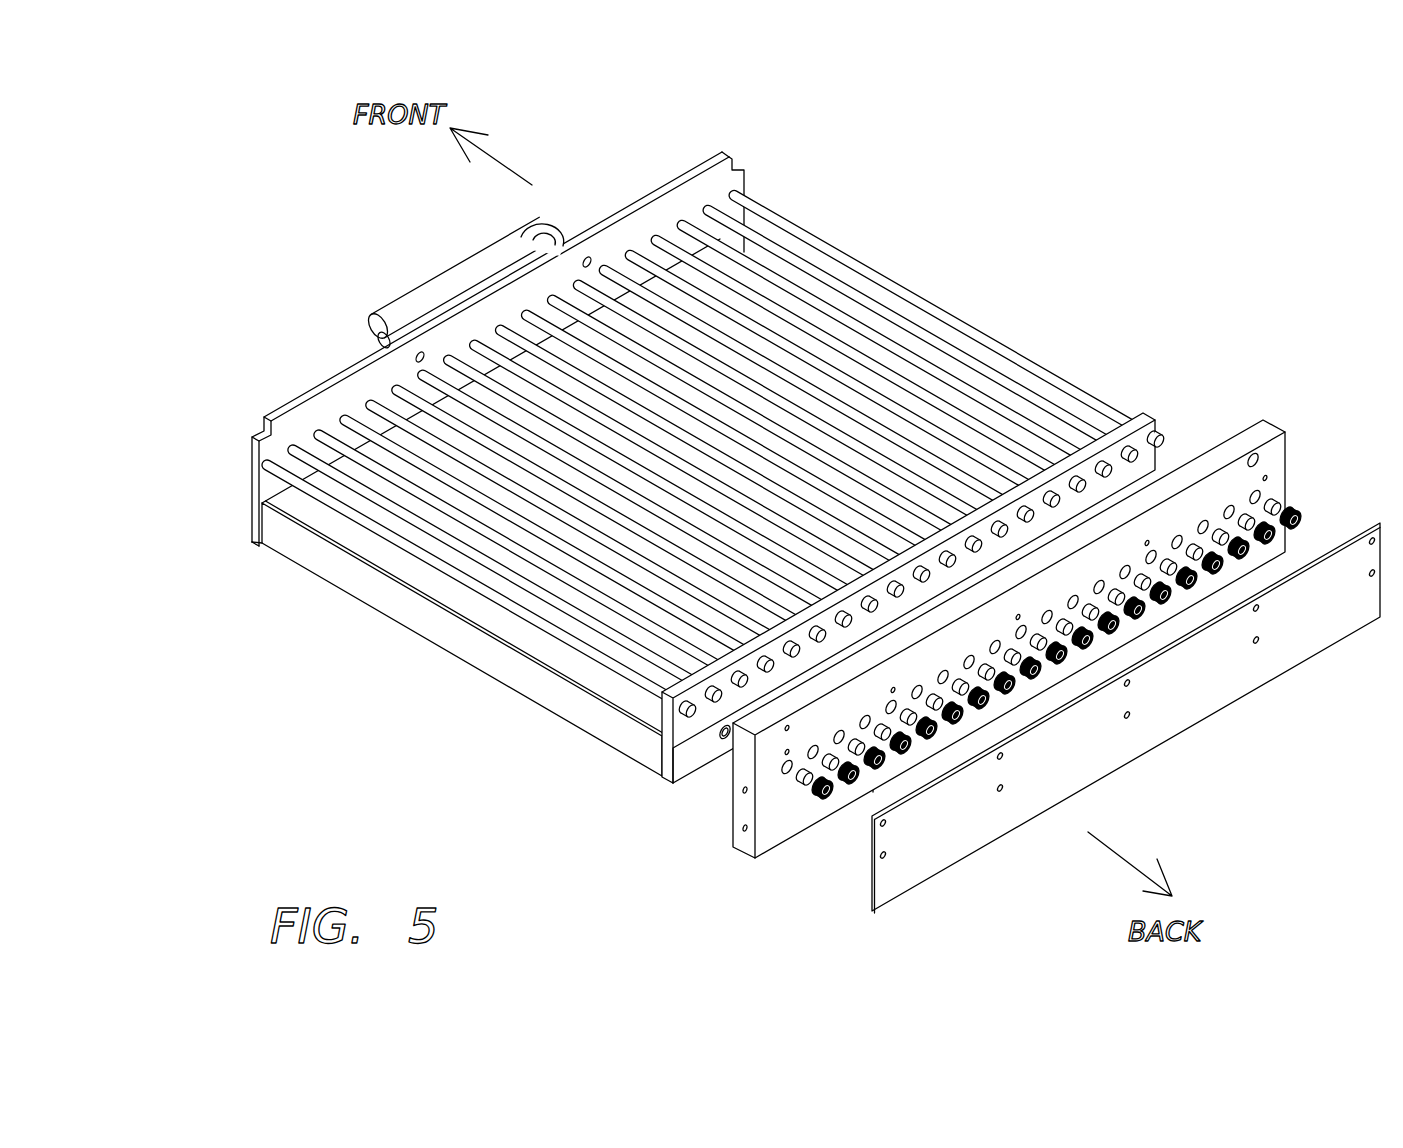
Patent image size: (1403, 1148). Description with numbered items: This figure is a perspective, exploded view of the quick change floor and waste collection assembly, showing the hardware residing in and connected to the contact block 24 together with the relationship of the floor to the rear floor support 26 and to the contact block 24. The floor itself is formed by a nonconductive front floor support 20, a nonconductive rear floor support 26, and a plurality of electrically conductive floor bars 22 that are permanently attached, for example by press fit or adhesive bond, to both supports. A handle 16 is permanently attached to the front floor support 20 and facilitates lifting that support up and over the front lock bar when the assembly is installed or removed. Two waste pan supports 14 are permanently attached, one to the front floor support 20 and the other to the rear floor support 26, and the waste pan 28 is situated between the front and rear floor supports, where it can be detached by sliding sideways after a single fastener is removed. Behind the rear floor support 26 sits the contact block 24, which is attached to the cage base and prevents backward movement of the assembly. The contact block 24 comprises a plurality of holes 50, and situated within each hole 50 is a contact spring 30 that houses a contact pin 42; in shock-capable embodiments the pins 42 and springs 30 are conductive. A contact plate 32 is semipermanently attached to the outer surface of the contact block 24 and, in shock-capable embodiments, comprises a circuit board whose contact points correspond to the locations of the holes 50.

The waste pan support 14 is at (263, 547).
The handle 16 is at (442, 287).
The front floor support 20 is at (343, 373).
The floor bars 22 is at (856, 333).
The contact block 24 is at (745, 842).
The rear floor support 26 is at (667, 723).
The waste pan 28 is at (455, 638).
The contact springs 30 is at (1291, 520).
The contact plate 32 is at (1182, 711).
The contact pins 42 is at (824, 792).
The holes 50 is at (1254, 495).